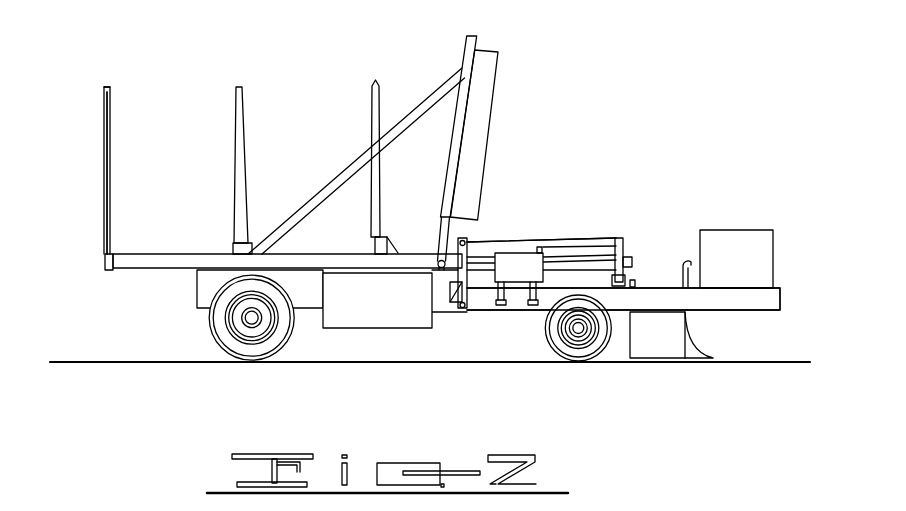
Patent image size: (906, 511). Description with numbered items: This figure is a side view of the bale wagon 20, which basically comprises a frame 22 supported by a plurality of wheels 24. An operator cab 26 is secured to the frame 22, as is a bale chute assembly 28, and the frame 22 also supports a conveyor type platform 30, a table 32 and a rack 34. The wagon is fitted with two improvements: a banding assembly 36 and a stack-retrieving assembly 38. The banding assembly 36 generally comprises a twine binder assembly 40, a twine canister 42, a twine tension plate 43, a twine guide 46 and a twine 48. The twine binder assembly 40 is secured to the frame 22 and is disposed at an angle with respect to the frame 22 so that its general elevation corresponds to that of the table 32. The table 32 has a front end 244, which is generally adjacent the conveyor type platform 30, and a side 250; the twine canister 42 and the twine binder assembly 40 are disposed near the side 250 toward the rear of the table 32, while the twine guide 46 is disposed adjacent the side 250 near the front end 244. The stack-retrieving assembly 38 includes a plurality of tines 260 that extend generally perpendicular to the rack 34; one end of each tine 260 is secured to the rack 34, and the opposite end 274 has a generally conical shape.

The bale wagon 20 is at (513, 56).
The frame 22 is at (305, 298).
The wheels 24 is at (220, 327).
The operator cab 26 is at (758, 297).
The bale chute assembly 28 is at (665, 339).
The conveyor type platform 30 is at (652, 288).
The table 32 is at (593, 260).
The rack 34 is at (190, 253).
The banding assembly 36 is at (489, 232).
The stack-retrieving assembly 38 is at (98, 172).
The twine binder assembly 40 is at (520, 240).
The twine canister 42 is at (450, 289).
The twine tension plate 43 is at (457, 236).
The twine guide 46 is at (620, 238).
The twine 48 is at (540, 247).
The front end 244 is at (631, 260).
The side 250 is at (559, 268).
The tines 260 is at (110, 112).
The opposite end 274 is at (107, 88).